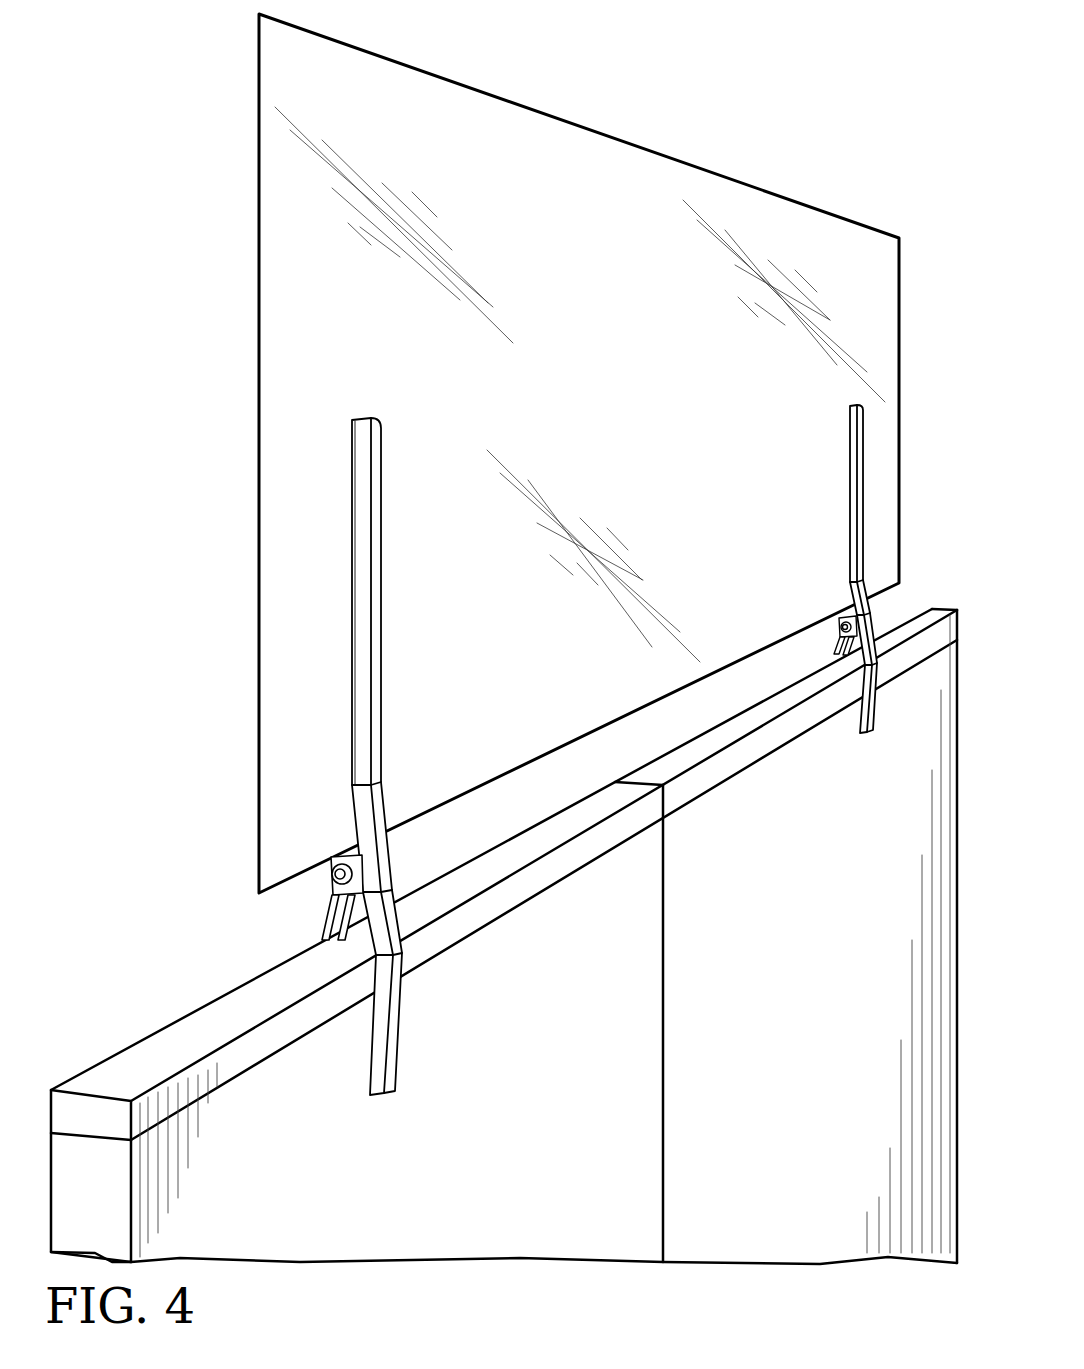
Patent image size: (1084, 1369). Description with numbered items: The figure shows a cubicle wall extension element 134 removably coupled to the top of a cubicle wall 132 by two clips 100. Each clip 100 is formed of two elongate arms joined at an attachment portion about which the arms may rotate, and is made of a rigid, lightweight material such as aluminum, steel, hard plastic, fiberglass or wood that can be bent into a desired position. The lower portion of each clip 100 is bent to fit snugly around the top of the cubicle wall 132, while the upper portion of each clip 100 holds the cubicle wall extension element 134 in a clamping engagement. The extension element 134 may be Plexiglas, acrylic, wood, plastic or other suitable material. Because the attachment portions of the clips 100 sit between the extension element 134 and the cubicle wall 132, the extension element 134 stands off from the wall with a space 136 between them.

The clip 100 is at (538, 742).
The cubicle wall 132 is at (683, 762).
The cubicle wall extension element 134 is at (292, 228).
The space 136 is at (480, 811).